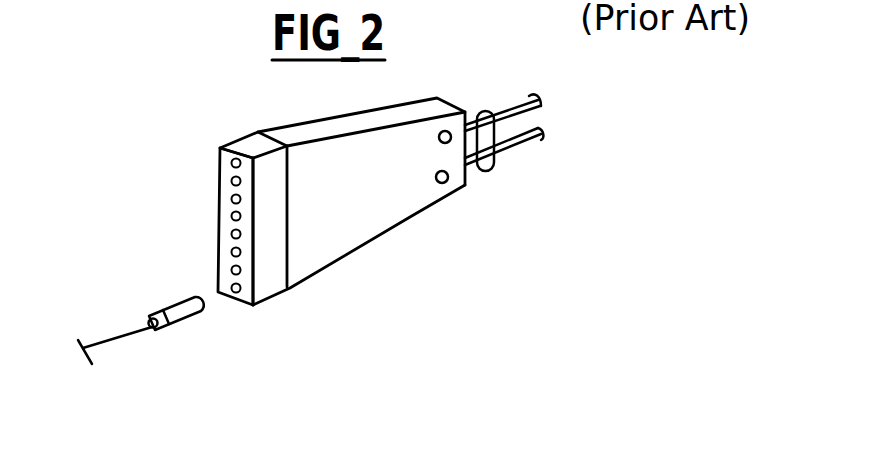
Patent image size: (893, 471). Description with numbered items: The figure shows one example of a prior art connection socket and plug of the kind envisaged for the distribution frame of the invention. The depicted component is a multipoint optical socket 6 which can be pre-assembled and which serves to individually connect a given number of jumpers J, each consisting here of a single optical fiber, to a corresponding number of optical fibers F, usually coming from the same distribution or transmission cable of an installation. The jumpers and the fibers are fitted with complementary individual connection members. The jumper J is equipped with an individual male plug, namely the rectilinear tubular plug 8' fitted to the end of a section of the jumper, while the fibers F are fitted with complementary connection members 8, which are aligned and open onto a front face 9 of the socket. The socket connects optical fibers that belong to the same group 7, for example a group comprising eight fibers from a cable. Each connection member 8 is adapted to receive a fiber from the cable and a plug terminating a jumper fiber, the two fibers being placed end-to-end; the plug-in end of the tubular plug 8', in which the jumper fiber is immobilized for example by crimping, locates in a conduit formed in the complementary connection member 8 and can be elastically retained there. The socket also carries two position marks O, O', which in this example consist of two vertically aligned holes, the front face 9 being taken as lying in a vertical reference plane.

The multipoint optical socket 6 is at (367, 277).
The group of fibers 7 is at (488, 172).
The complementary connection member 8 is at (193, 226).
The rectilinear tubular plug 8' is at (182, 347).
The front face 9 is at (220, 177).
The jumper J is at (133, 328).
The position mark O is at (465, 88).
The position mark O' is at (462, 229).
The optical fiber F is at (505, 125).